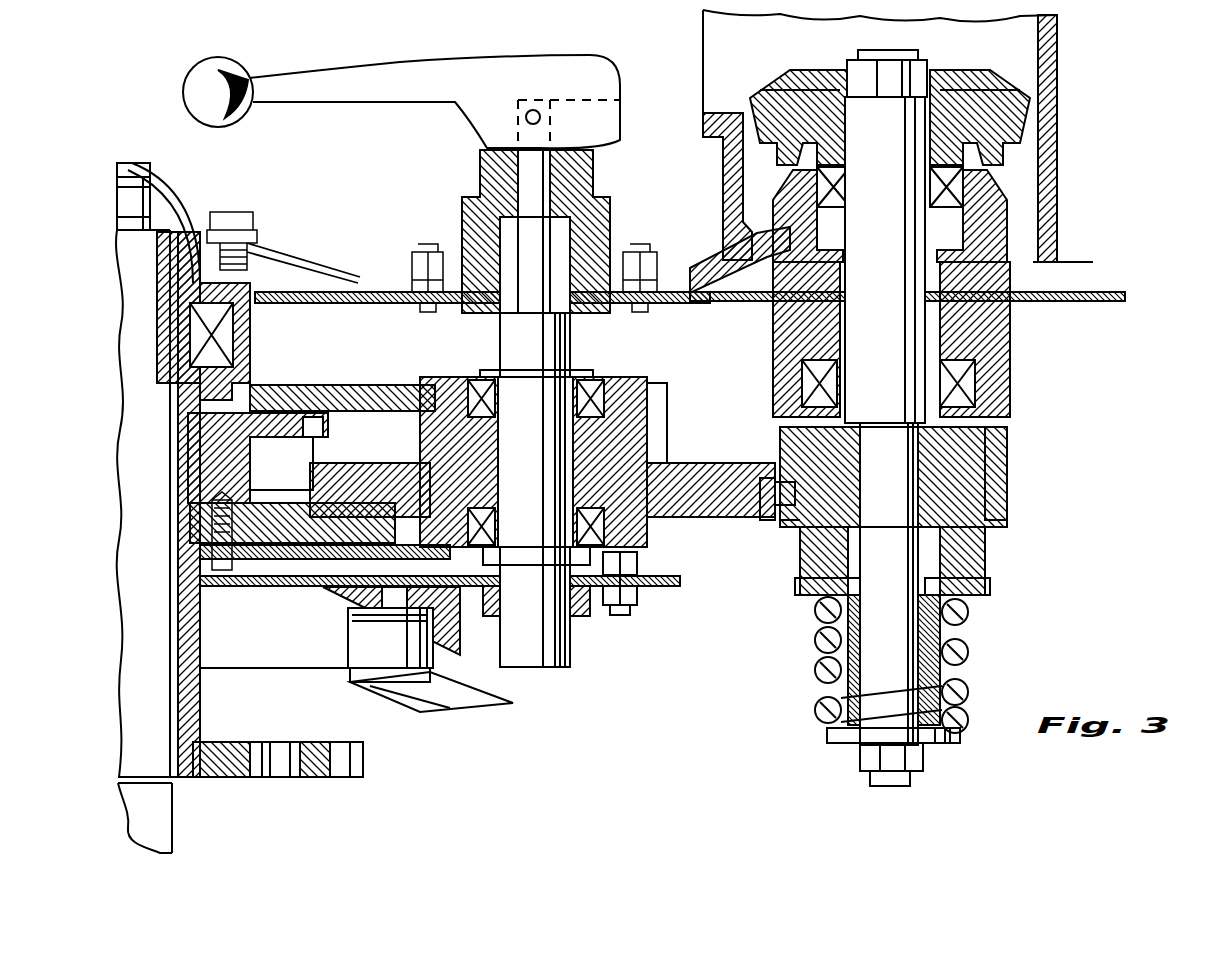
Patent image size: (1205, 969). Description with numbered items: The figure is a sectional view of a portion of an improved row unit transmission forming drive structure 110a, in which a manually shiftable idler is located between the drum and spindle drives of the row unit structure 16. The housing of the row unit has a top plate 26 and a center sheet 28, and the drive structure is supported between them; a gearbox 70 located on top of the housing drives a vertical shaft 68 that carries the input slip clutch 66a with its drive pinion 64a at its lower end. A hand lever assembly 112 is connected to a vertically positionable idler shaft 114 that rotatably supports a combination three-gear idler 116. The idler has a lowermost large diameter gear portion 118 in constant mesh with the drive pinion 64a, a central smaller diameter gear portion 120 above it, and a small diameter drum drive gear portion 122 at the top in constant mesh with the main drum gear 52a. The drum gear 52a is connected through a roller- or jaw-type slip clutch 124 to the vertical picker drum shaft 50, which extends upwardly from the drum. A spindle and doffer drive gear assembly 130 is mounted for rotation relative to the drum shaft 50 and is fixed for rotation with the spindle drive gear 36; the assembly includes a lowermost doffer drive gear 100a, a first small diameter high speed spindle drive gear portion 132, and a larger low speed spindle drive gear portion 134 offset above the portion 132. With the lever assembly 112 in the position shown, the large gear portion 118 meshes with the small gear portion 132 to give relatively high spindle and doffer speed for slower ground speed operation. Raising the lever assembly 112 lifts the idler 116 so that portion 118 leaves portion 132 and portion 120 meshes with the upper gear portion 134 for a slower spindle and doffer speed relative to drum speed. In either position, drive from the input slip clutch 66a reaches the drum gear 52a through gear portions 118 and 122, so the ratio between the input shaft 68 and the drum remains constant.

The row unit structure 16 is at (1148, 248).
The top plate 26 is at (382, 292).
The center sheet 28 is at (660, 582).
The spindle drive gear 36 is at (345, 742).
The picker drum shaft 50 is at (132, 256).
The main drum gear 52a is at (392, 386).
The drive pinion 64a is at (1008, 490).
The input slip clutch 66a is at (995, 560).
The vertical shaft 68 is at (900, 368).
The gearbox 70 is at (1068, 210).
The doffer drive gear 100a is at (342, 545).
The drive structure 110a is at (1025, 443).
The hand lever assembly 112 is at (672, 55).
The idler shaft 114 is at (570, 648).
The combination 3-gear idler 116 is at (682, 400).
The large diameter gear portion 118 is at (766, 520).
The smaller diameter gear portion 120 is at (748, 463).
The drum drive gear portion 122 is at (657, 390).
The slip clutch 124 is at (188, 337).
The spindle and doffer drive gear assembly 130 is at (270, 428).
The high speed spindle drive gear portion 132 is at (262, 462).
The low speed spindle drive gear portion 134 is at (327, 386).